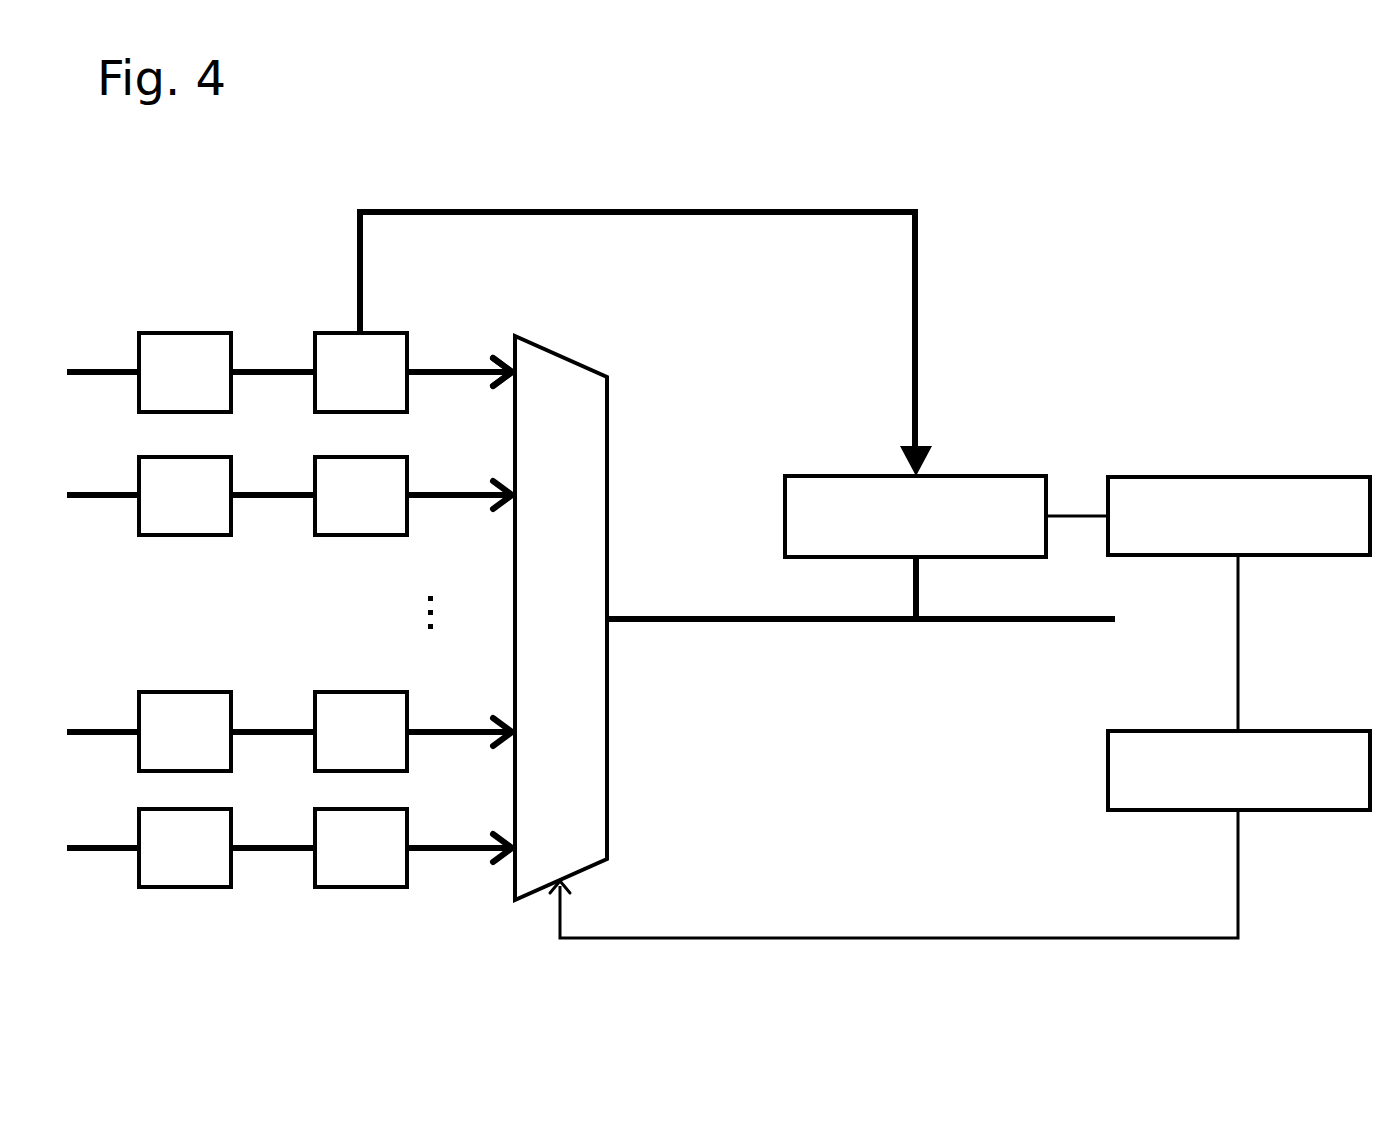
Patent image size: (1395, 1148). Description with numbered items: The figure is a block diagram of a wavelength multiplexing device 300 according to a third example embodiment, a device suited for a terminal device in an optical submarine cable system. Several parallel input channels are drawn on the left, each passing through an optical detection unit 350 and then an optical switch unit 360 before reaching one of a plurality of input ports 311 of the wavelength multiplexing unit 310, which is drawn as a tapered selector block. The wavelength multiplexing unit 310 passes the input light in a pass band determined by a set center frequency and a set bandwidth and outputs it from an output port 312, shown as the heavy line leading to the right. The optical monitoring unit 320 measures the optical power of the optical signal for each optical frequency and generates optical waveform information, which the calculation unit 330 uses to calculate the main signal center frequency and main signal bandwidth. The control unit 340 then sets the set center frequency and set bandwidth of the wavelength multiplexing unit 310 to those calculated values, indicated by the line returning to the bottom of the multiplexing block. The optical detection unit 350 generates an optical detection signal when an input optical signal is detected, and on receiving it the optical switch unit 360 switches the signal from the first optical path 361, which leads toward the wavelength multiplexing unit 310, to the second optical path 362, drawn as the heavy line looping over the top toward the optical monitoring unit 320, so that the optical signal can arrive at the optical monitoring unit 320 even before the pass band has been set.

The wavelength multiplexing device 300 is at (838, 169).
The wavelength multiplexing unit 310 is at (560, 349).
The input port 311 is at (512, 367).
The output port 312 is at (609, 616).
The optical monitoring unit 320 is at (830, 475).
The calculation unit 330 is at (1243, 476).
The control unit 340 is at (1108, 765).
The optical detection unit 350 is at (186, 332).
The optical switch unit 360 is at (331, 332).
The first optical path 361 is at (455, 378).
The second optical path 362 is at (448, 208).